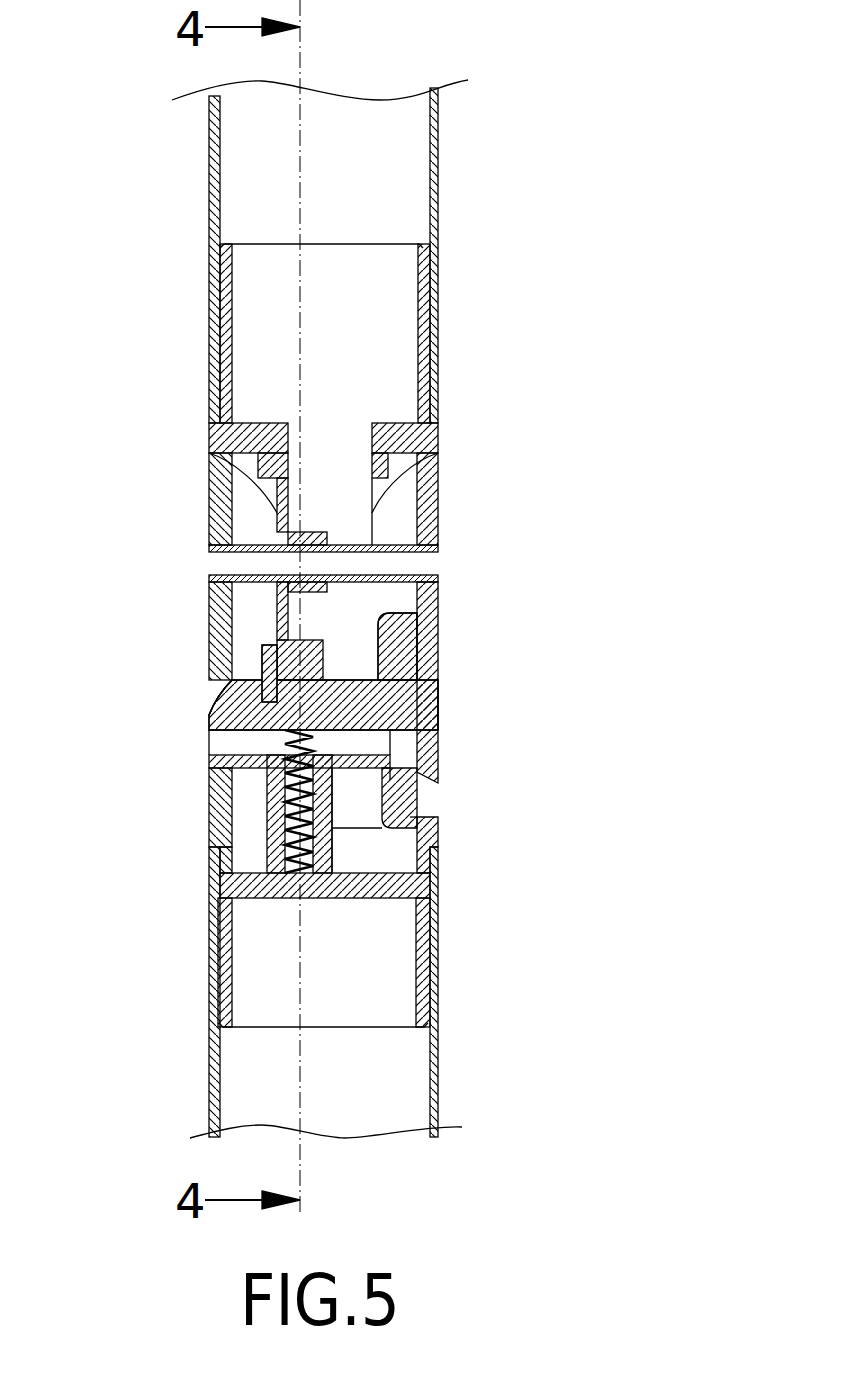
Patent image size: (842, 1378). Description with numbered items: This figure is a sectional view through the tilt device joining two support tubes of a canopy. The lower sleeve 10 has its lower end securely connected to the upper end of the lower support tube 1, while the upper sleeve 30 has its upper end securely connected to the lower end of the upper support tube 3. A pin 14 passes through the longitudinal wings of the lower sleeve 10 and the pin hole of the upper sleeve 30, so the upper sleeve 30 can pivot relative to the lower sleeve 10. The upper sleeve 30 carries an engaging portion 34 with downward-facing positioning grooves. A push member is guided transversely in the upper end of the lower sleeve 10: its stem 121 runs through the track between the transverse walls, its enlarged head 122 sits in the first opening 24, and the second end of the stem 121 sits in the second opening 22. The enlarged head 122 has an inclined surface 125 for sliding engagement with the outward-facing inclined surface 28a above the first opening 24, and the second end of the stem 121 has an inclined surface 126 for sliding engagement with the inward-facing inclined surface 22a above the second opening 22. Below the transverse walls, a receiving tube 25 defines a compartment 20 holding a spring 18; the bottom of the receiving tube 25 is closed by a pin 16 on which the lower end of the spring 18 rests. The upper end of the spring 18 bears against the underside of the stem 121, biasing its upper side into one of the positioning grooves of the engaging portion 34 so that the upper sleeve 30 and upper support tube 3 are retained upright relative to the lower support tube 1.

The lower support tube 1 is at (438, 975).
The upper support tube 3 is at (440, 160).
The lower sleeve 10 is at (222, 965).
The pin 14 is at (438, 542).
The pin 16 is at (368, 882).
The spring 18 is at (292, 880).
The compartment 20 is at (328, 800).
The second opening 22 is at (210, 747).
The inclined surface 22a is at (210, 715).
The first opening 24 is at (428, 805).
The receiving tube 25 is at (275, 787).
The inclined surface 28a is at (397, 646).
The upper sleeve 30 is at (430, 320).
The engaging portion 34 is at (290, 650).
The stem 121 is at (353, 715).
The enlarged head 122 is at (423, 703).
The inclined surface 125 is at (420, 650).
The inclined surface 126 is at (220, 697).